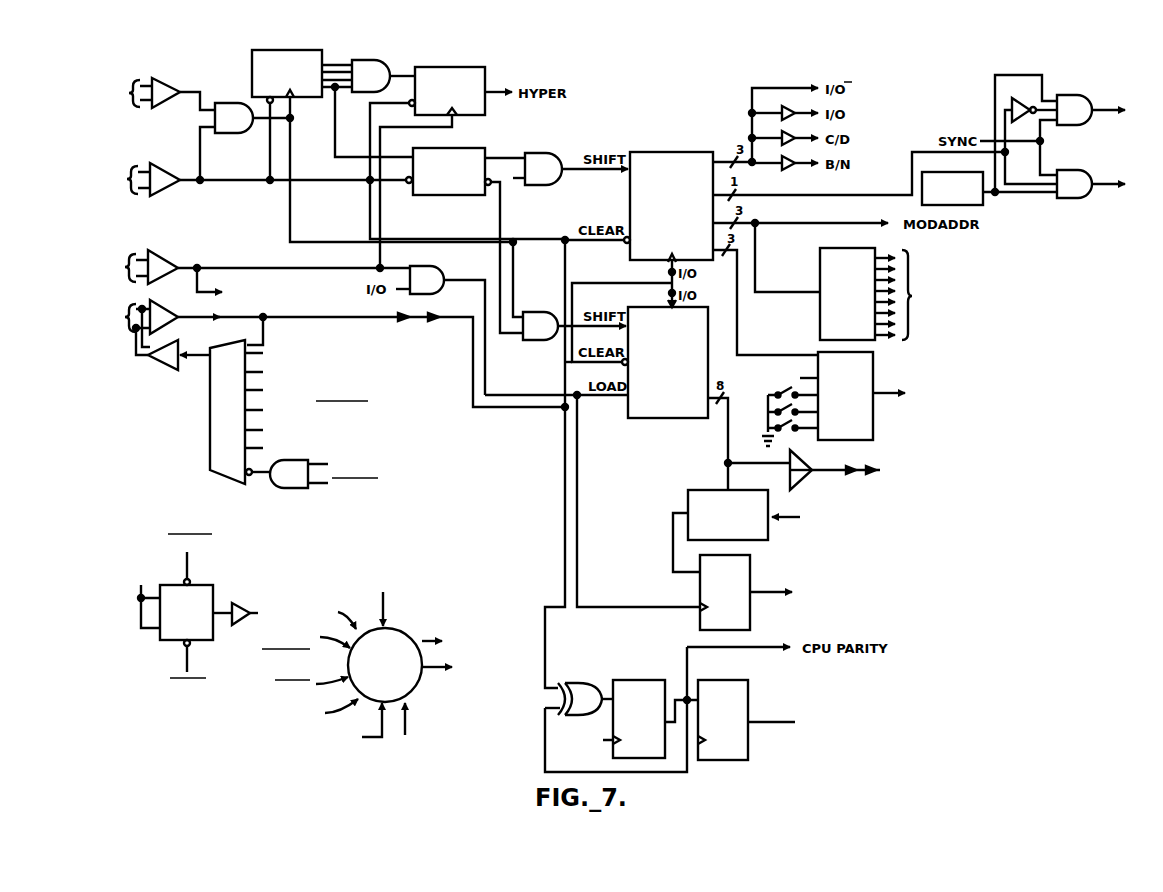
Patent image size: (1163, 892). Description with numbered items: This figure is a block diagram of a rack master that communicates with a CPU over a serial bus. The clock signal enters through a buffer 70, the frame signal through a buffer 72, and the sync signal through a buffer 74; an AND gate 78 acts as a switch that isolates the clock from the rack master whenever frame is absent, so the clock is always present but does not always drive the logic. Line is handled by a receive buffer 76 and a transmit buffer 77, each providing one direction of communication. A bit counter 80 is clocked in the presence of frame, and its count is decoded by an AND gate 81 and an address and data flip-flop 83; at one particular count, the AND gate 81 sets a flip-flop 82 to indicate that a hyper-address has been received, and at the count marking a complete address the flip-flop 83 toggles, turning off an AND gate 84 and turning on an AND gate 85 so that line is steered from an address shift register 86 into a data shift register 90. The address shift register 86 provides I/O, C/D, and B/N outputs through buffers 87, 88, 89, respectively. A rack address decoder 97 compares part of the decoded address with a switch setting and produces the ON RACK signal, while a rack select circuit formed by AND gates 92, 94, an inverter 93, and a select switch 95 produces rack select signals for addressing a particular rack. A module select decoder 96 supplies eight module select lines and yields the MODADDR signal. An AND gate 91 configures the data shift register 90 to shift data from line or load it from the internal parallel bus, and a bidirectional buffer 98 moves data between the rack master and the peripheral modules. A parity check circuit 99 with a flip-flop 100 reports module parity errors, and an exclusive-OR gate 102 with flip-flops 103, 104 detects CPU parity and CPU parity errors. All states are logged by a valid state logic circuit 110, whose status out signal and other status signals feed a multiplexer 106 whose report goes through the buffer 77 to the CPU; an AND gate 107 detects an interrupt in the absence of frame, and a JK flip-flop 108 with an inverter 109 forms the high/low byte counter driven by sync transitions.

The buffer 70 is at (152, 78).
The buffer 72 is at (152, 163).
The buffer 74 is at (150, 250).
The receive buffer 76 is at (152, 300).
The transmit buffer 77 is at (165, 370).
The AND gate 78 is at (234, 118).
The bit counter 80 is at (305, 50).
The AND gate 81 is at (375, 60).
The flip-flop 82 is at (468, 67).
The address and data flip-flop 83 is at (468, 148).
The AND gate 84 is at (548, 153).
The AND gate 85 is at (545, 312).
The address shift register 86 is at (688, 152).
The buffer 87 is at (785, 109).
The buffer 88 is at (785, 134).
The buffer 89 is at (785, 159).
The data shift register 90 is at (706, 306).
The AND gate 91 is at (432, 266).
The AND gate 92 is at (1078, 95).
The inverter 93 is at (1018, 98).
The AND gate 94 is at (1078, 170).
The select switch 95 is at (975, 205).
The module select decoder 96 is at (818, 270).
The rack address decoder 97 is at (873, 420).
The bidirectional buffer 98 is at (805, 452).
The parity check circuit 99 is at (745, 490).
The flip-flop 100 is at (750, 560).
The exclusive-OR gate 102 is at (565, 683).
The flip-flop 103 is at (630, 680).
The flip-flop 104 is at (720, 680).
The multiplexer 106 is at (226, 484).
The AND gate 107 is at (292, 488).
The JK flip-flop 108 is at (205, 585).
The inverter 109 is at (240, 603).
The valid state logic circuit 110 is at (400, 633).